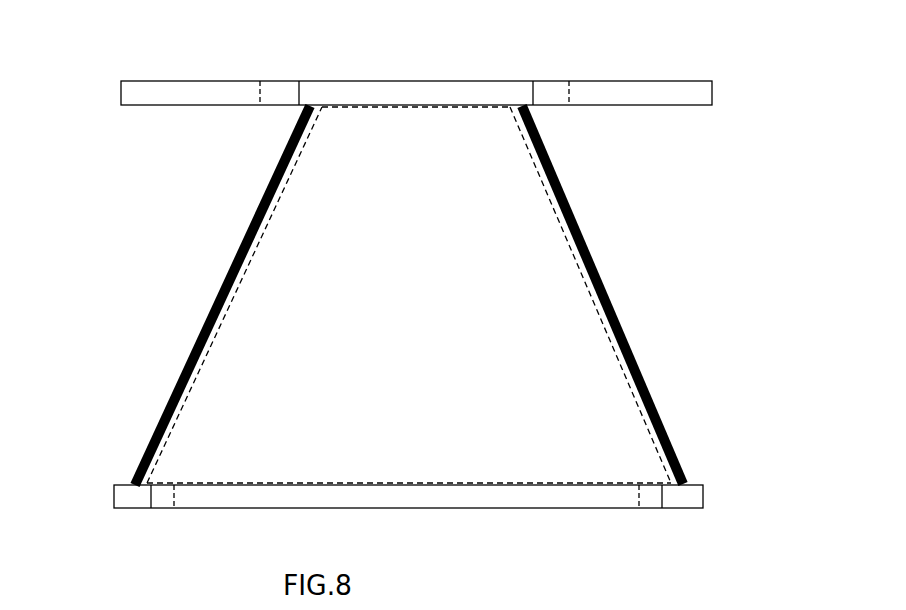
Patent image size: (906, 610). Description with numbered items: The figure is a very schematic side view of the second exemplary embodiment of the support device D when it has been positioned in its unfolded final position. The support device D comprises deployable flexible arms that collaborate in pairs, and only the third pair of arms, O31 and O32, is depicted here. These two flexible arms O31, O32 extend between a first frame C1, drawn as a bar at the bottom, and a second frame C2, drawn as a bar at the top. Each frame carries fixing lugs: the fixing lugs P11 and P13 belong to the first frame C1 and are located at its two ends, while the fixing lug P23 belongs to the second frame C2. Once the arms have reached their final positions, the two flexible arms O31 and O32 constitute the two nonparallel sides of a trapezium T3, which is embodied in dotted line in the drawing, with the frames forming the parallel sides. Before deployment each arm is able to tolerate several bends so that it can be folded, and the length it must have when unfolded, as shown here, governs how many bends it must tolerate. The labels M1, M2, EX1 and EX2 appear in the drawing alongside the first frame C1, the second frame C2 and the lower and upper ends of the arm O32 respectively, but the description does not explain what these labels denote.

The support device D is at (607, 66).
The second frame C2 is at (160, 81).
The second mirror M2 is at (543, 82).
The fixing lug P23 is at (339, 80).
The first mirror M1 is at (537, 503).
The first frame C1 is at (164, 509).
The trapezium T3 is at (471, 494).
The fixing lug P11 is at (103, 497).
The fixing lug P13 is at (715, 496).
The flexible arm O32 is at (230, 262).
The flexible arm O31 is at (560, 185).
The first extension line EX1 is at (118, 467).
The second extension line EX2 is at (278, 119).